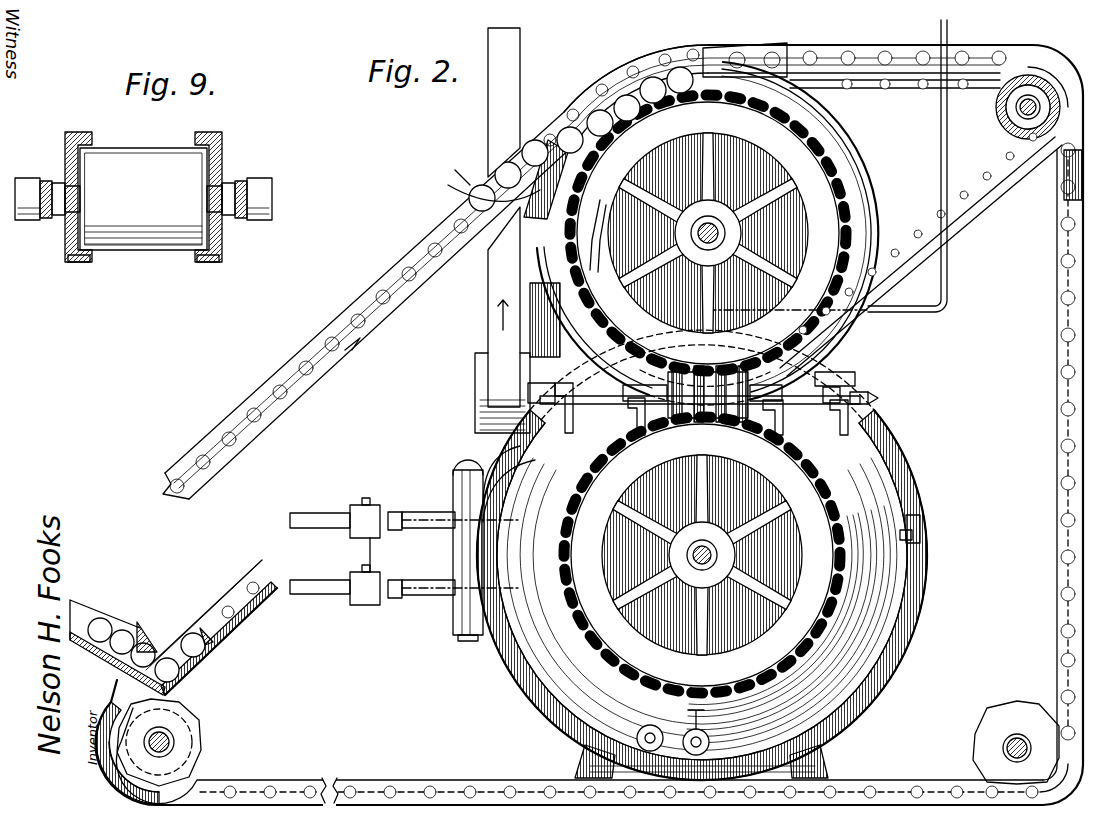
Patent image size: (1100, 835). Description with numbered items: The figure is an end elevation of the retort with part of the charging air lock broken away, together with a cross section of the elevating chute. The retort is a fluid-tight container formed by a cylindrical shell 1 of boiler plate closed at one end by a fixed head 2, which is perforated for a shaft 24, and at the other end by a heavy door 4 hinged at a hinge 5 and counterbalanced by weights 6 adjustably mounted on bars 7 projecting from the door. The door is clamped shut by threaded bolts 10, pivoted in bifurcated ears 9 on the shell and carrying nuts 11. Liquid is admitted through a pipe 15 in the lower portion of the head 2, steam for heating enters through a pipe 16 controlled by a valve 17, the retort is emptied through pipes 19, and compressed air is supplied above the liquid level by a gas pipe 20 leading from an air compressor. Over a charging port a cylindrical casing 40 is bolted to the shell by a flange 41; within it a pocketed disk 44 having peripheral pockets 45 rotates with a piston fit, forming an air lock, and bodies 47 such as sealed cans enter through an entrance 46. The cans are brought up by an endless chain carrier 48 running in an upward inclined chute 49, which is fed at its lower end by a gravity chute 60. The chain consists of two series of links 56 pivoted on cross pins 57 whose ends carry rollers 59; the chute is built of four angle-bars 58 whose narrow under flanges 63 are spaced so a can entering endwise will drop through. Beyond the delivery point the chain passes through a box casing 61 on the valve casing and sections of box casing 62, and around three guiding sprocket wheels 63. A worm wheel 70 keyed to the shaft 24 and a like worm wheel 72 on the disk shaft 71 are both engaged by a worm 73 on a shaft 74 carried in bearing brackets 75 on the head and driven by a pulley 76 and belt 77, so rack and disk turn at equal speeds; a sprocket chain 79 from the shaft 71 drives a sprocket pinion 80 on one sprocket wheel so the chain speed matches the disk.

In FIG. 2, the cylindrical shell 1 is at (912, 520).
In FIG. 2, the fixed head 2 is at (702, 604).
In FIG. 2, the door 4 is at (478, 458).
In FIG. 2, the hinge 5 is at (456, 495).
In FIG. 2, the weights 6 is at (378, 548).
In FIG. 2, the bars 7 is at (410, 512).
In FIG. 2, the bifurcated ears 9 is at (922, 522).
In FIG. 2, the threaded bolts 10 is at (920, 540).
In FIG. 2, the nuts 11 is at (876, 398).
In FIG. 2, the pipe 15 is at (650, 725).
In FIG. 2, the pipe 16 is at (710, 742).
In FIG. 2, the controlling valve 17 is at (709, 709).
In FIG. 2, the pipes 19 is at (728, 790).
In FIG. 2, the gas pipe 20 is at (878, 313).
In FIG. 2, the shaft 24 is at (722, 545).
In FIG. 2, the cylindrical casing 40 is at (878, 210).
In FIG. 2, the flange 41 is at (840, 372).
In FIG. 2, the pocketed disk 44 is at (698, 120).
In FIG. 2, the pockets 45 is at (591, 236).
In FIG. 2, the entrance 46 is at (597, 75).
In FIG. 9, the bodies 47 is at (143, 199).
In FIG. 2, the bodies 47 is at (540, 120).
In FIG. 2, the endless chain carrier 48 is at (636, 66).
In FIG. 2, the inclined chute 49 is at (323, 330).
In FIG. 9, the links 56 is at (244, 182).
In FIG. 2, the links 56 is at (238, 622).
In FIG. 2, the cross pins 57 is at (478, 182).
In FIG. 9, the angle-bars 58 is at (80, 136).
In FIG. 9, the rollers 59 is at (268, 222).
In FIG. 2, the rollers 59 is at (828, 58).
In FIG. 2, the gravity chute 60 is at (88, 612).
In FIG. 2, the box casing 61 is at (735, 50).
In FIG. 2, the box casing sections 62 is at (1000, 58).
In FIG. 9, the guiding sprocket wheels 63 is at (197, 262).
In FIG. 2, the guiding sprocket wheels 63 is at (200, 735).
In FIG. 2, the worm wheel 70 is at (702, 555).
In FIG. 2, the shaft 71 is at (722, 222).
In FIG. 2, the worm wheel 72 is at (716, 233).
In FIG. 2, the worm 73 is at (708, 418).
In FIG. 2, the shaft 74 is at (805, 418).
In FIG. 2, the bearing brackets 75 is at (580, 420).
In FIG. 2, the pulley 76 is at (478, 402).
In FIG. 2, the belt 77 is at (480, 283).
In FIG. 2, the sprocket chain 79 is at (965, 198).
In FIG. 2, the sprocket pinion 80 is at (1000, 122).